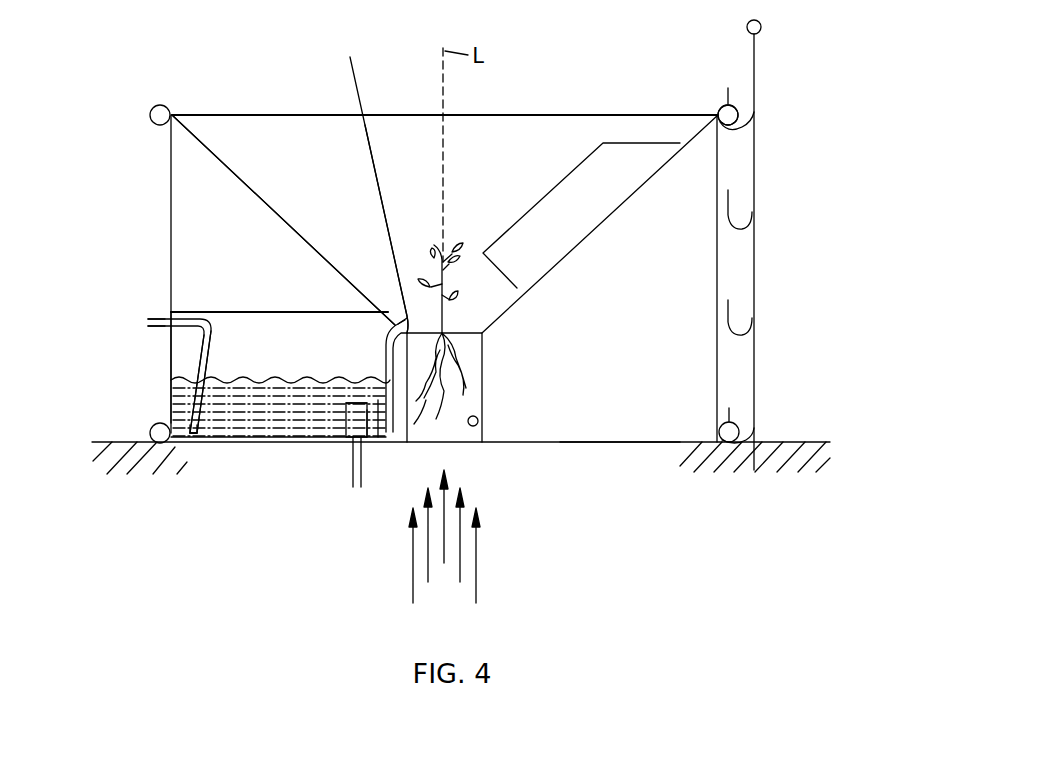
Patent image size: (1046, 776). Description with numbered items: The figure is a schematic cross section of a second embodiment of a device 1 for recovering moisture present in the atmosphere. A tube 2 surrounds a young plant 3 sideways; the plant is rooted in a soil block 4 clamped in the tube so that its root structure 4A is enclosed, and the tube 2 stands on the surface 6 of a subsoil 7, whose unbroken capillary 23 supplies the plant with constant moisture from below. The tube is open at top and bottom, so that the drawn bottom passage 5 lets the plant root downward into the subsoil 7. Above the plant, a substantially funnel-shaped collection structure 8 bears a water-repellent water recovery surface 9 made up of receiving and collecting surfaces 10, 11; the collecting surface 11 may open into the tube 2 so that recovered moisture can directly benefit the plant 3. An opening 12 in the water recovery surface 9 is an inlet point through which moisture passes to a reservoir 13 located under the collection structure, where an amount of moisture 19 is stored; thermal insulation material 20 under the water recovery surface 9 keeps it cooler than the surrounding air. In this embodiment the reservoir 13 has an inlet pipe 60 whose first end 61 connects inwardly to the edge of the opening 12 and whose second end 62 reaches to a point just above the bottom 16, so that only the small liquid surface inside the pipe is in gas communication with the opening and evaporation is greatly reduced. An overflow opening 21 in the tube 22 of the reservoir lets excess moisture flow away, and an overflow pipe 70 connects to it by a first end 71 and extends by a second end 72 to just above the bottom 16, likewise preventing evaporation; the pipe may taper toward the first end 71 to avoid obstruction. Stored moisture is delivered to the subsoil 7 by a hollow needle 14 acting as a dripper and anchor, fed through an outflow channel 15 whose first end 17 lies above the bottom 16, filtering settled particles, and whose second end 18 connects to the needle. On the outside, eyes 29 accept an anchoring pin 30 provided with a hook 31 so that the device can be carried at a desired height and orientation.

The device 1 is at (146, 80).
The tube 2 is at (483, 402).
The young plant 3 is at (432, 257).
The soil block 4 is at (457, 415).
The root structure 4A is at (447, 423).
The drain hole 5 is at (476, 424).
The surface 6 is at (808, 441).
The subsoil 7 is at (632, 503).
The collection structure 8 is at (289, 155).
The water recovery surface 9 is at (221, 157).
The receiving surface 10 is at (606, 162).
The collecting surface 11 is at (503, 313).
The opening 12 is at (365, 125).
The reservoir 13 is at (190, 350).
The hollow needle 14 is at (352, 465).
The outflow channel 15 is at (378, 403).
The bottom 16 is at (248, 445).
The first end 17 is at (352, 407).
The second end 18 is at (360, 433).
The moisture 19 is at (207, 413).
The thermal insulation material 20 is at (187, 230).
The overflow opening 21 is at (150, 320).
The tube of the reservoir 22 is at (170, 370).
The capillary 23 is at (459, 613).
The eye 29 is at (740, 112).
The anchoring pin 30 is at (758, 44).
The hook 31 is at (732, 203).
The inlet pipe 60 is at (386, 353).
The first end 61 is at (395, 322).
The second end 62 is at (378, 405).
The overflow pipe 70 is at (215, 336).
The first end 71 is at (163, 313).
The second end 72 is at (180, 423).